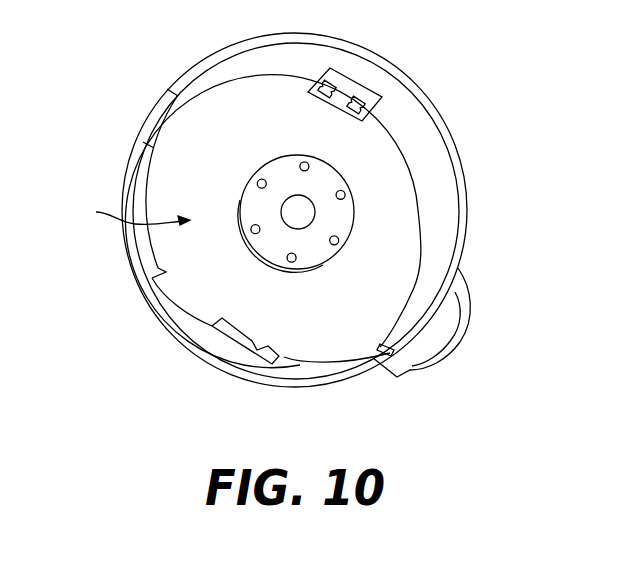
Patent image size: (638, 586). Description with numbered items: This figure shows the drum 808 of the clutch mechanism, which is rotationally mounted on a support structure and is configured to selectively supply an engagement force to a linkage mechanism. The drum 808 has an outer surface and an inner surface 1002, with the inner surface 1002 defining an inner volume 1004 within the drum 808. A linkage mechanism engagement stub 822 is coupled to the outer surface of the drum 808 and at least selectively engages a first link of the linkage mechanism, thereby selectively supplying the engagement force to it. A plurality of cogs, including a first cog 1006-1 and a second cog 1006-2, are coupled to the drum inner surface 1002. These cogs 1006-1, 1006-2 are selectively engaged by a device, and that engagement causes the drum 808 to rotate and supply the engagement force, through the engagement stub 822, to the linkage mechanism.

The drum 808 is at (408, 53).
The drum inner surface 1002 is at (183, 166).
The inner volume 1004 is at (116, 214).
The cog 1006-1 is at (338, 98).
The cog 1006-2 is at (252, 338).
The linkage mechanism engagement stub 822 is at (430, 362).